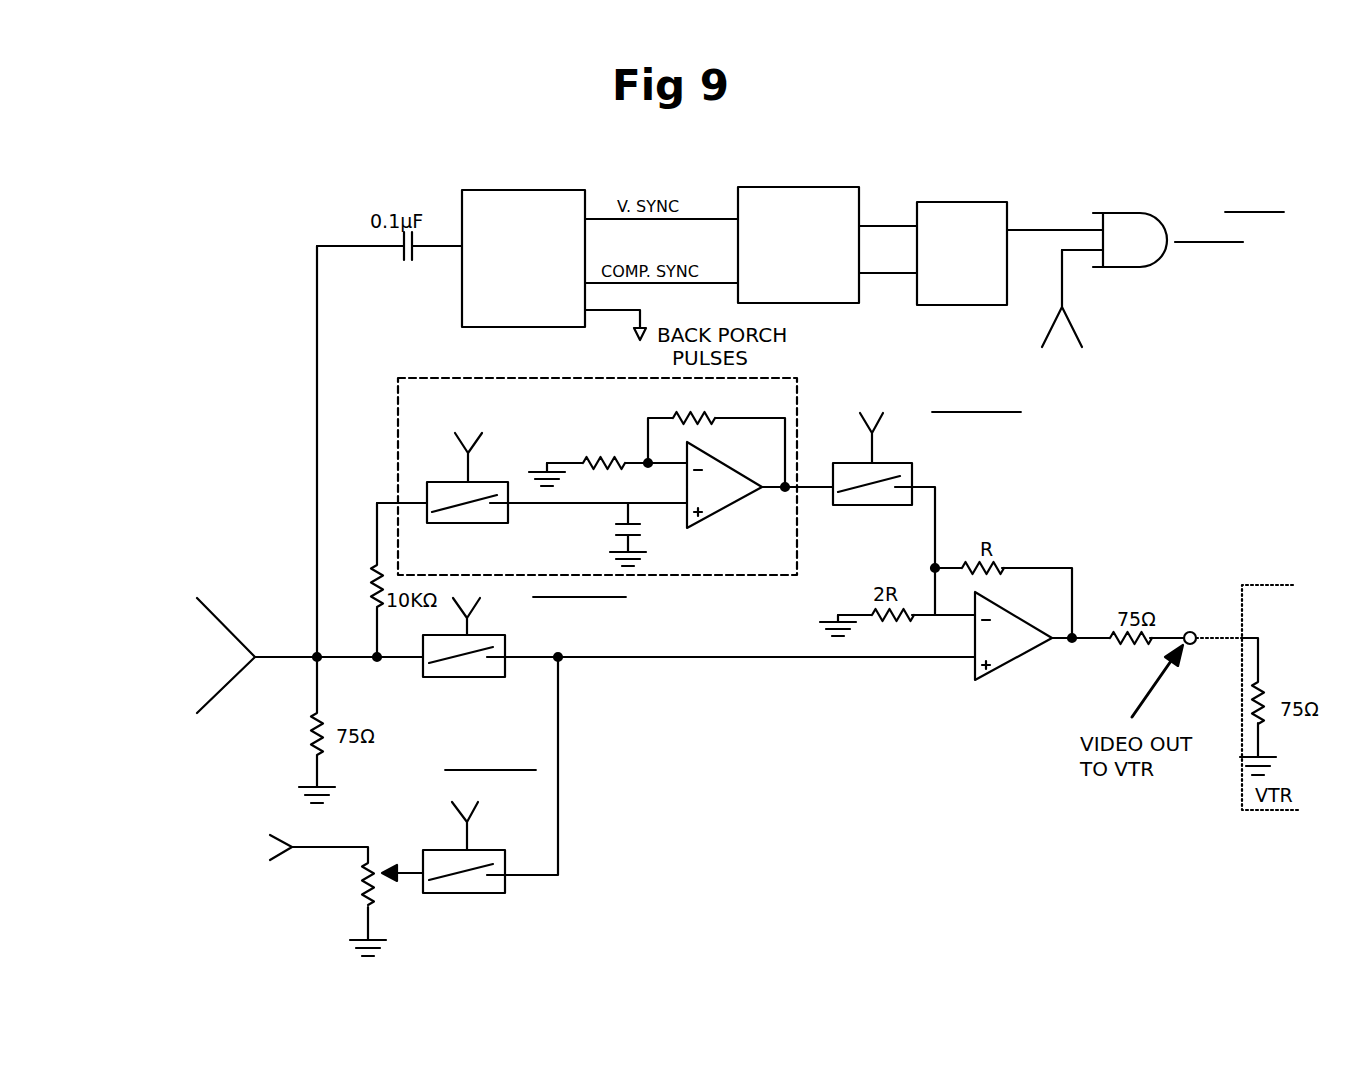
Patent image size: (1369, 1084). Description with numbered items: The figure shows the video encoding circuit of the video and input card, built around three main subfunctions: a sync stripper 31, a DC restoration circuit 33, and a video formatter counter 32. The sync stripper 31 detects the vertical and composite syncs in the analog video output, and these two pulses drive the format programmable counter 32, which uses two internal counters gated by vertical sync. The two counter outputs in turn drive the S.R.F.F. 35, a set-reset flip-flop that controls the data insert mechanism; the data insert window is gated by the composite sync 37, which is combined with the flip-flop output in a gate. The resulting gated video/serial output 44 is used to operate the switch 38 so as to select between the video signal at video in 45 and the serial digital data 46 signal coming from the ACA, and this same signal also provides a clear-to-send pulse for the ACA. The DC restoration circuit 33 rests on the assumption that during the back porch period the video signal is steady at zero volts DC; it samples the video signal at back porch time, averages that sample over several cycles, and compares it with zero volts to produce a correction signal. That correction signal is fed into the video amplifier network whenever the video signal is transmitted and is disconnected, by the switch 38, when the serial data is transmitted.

The sync stripper 31 is at (515, 190).
The format programmable counter 32 is at (805, 187).
The DC restoration circuit 33 is at (725, 575).
The S.R.F.F. 35 is at (985, 202).
The composite sync 37 is at (1073, 395).
The switch 38 is at (860, 505).
The VID/RS-232 gated output 44 is at (1207, 213).
The video in 45 is at (218, 602).
The RS-232 digital data signal 46 is at (211, 834).